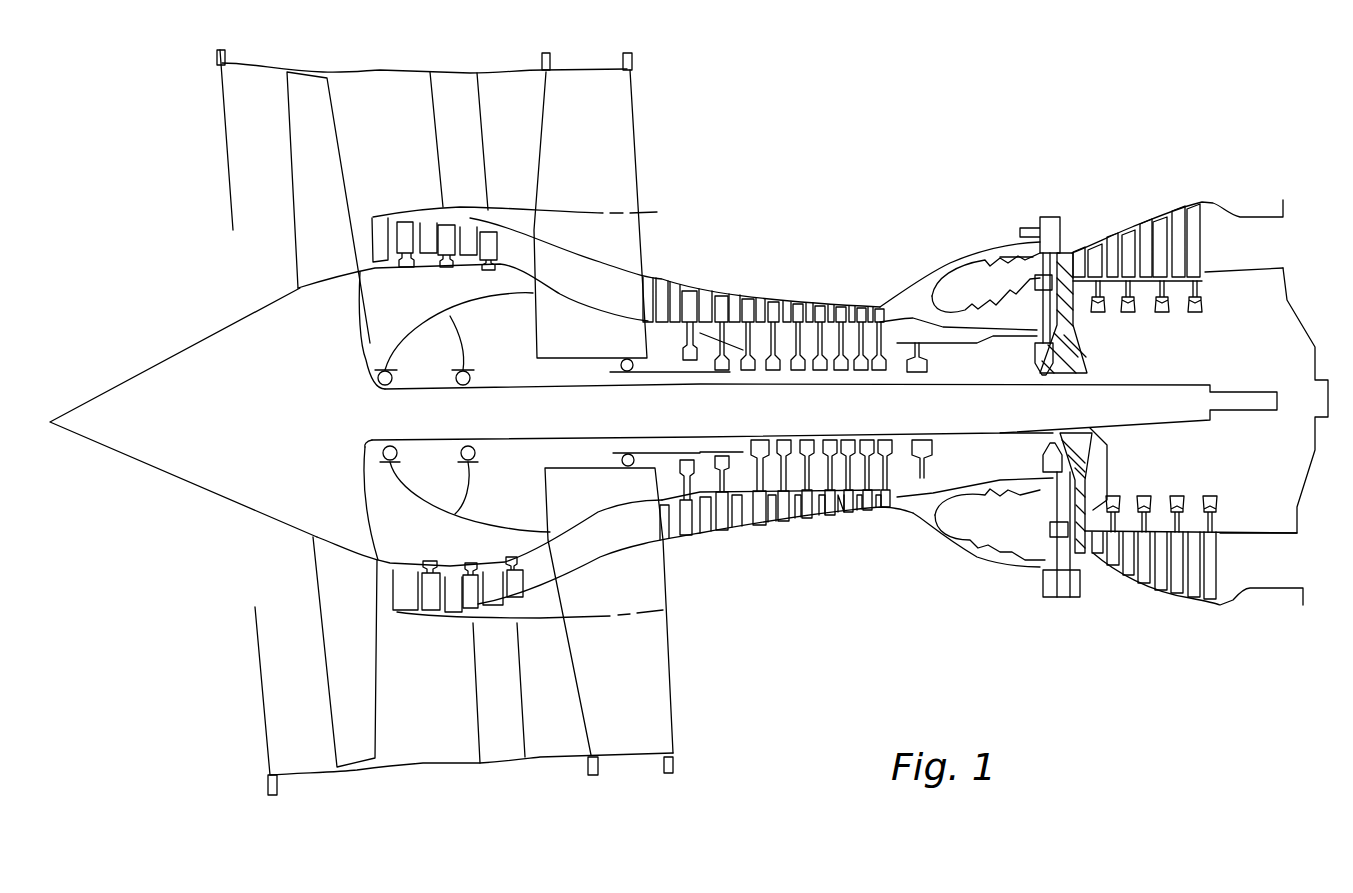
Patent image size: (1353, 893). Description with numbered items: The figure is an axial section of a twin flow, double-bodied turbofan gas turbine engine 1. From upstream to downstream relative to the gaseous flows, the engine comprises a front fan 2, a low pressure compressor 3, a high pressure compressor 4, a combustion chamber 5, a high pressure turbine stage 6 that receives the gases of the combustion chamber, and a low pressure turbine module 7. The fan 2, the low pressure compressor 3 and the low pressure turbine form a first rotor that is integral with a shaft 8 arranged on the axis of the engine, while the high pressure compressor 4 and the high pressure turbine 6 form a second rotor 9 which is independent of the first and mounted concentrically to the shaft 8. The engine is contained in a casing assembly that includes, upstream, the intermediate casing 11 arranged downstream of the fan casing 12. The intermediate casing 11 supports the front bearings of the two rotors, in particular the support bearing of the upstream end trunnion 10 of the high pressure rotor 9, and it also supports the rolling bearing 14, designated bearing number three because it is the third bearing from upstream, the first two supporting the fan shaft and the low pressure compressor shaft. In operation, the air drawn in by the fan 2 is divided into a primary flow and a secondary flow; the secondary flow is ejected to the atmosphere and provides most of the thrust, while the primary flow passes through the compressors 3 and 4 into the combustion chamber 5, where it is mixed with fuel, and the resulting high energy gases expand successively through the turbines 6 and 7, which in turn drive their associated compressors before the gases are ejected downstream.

The engine 1 is at (778, 140).
The front fan 2 is at (287, 157).
The low pressure compressor 3 is at (481, 233).
The high pressure compressor 4 is at (707, 300).
The combustion chamber 5 is at (947, 270).
The high pressure turbine stage 6 is at (1063, 263).
The low pressure turbine module 7 is at (1108, 247).
The shaft 8 is at (960, 410).
The second rotor 9 is at (1200, 303).
The upstream end trunnion 10 is at (672, 503).
The intermediate casing 11 is at (638, 720).
The fan casing 12 is at (432, 767).
The rolling bearing 14 is at (625, 356).